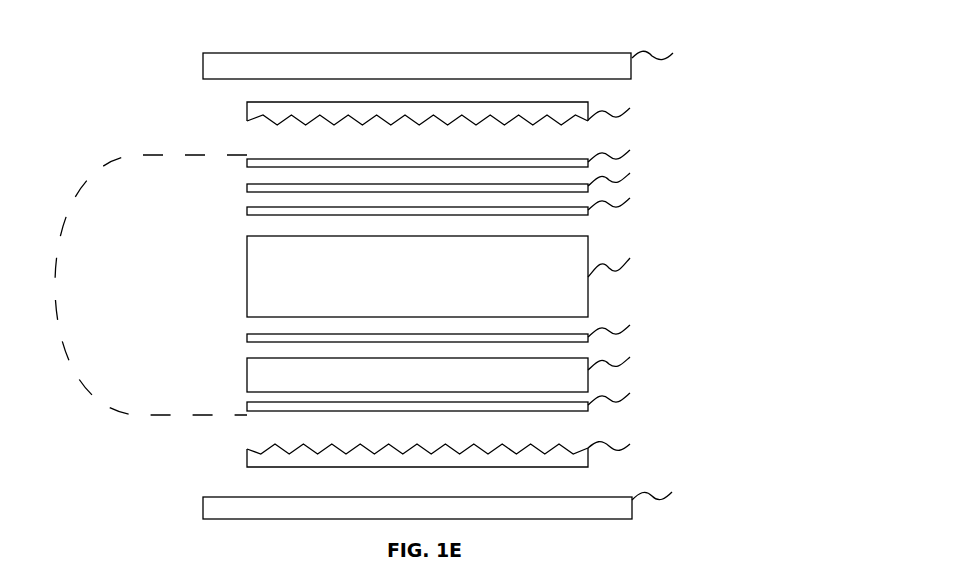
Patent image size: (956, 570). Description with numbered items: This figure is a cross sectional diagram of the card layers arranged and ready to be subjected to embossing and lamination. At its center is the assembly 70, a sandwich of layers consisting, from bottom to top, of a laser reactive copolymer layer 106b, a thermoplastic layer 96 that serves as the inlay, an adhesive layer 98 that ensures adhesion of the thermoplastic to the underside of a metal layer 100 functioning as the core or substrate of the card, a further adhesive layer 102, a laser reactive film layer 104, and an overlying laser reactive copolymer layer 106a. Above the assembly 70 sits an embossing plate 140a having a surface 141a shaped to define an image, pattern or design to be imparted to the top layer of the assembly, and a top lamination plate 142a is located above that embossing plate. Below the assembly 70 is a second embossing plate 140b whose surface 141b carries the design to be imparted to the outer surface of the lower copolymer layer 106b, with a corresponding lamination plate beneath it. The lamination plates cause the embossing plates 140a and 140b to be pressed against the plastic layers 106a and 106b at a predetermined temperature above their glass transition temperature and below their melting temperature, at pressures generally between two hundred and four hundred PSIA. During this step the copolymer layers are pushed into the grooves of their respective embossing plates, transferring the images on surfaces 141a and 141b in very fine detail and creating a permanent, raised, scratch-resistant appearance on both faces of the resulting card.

The assembly 70 is at (47, 280).
The top lamination plate 142a is at (203, 62).
The embossing plate 140a is at (475, 119).
The surface 141a is at (402, 120).
The laser reactive copolymer layer 106a is at (247, 163).
The laser reactive film layer 104 is at (247, 188).
The adhesive layer 102 is at (247, 211).
The metal layer 100 is at (247, 288).
The adhesive layer 98 is at (247, 336).
The thermoplastic layer 96 is at (247, 380).
The laser reactive copolymer layer 106b is at (247, 409).
The embossing plate 140b is at (473, 443).
The surface 141b is at (403, 450).